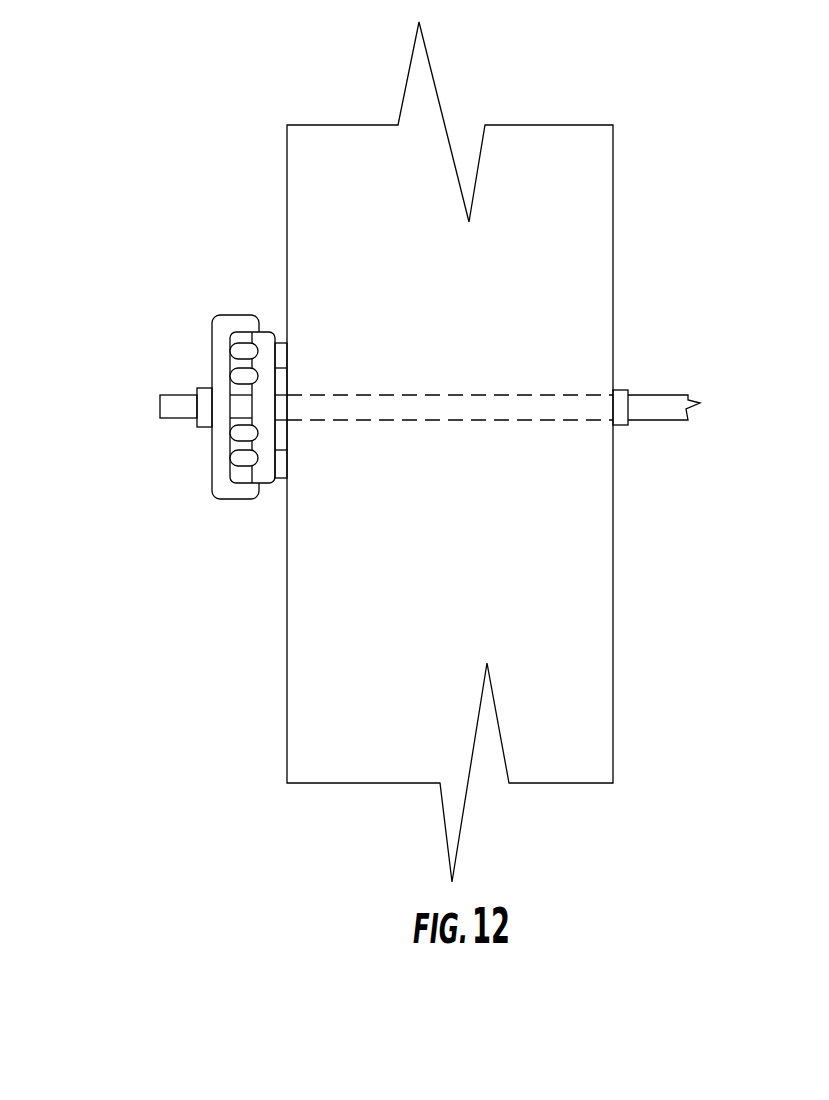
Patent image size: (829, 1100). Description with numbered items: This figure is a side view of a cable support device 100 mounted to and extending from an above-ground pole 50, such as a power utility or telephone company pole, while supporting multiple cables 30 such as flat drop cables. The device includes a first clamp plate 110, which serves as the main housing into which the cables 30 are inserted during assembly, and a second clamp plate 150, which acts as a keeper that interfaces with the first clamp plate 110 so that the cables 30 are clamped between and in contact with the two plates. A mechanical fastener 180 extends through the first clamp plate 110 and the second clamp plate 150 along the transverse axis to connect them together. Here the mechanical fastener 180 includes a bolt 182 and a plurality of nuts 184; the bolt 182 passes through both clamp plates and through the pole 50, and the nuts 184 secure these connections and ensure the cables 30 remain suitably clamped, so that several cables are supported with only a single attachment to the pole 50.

The above-ground pole 50 is at (660, 304).
The cable support device 100 is at (178, 585).
The first clamp plate 110 is at (261, 473).
The second clamp plate 150 is at (210, 487).
The cable 30 is at (242, 458).
The mechanical fastener 180 is at (163, 442).
The bolt 182 is at (165, 410).
The nut 184 is at (205, 388).